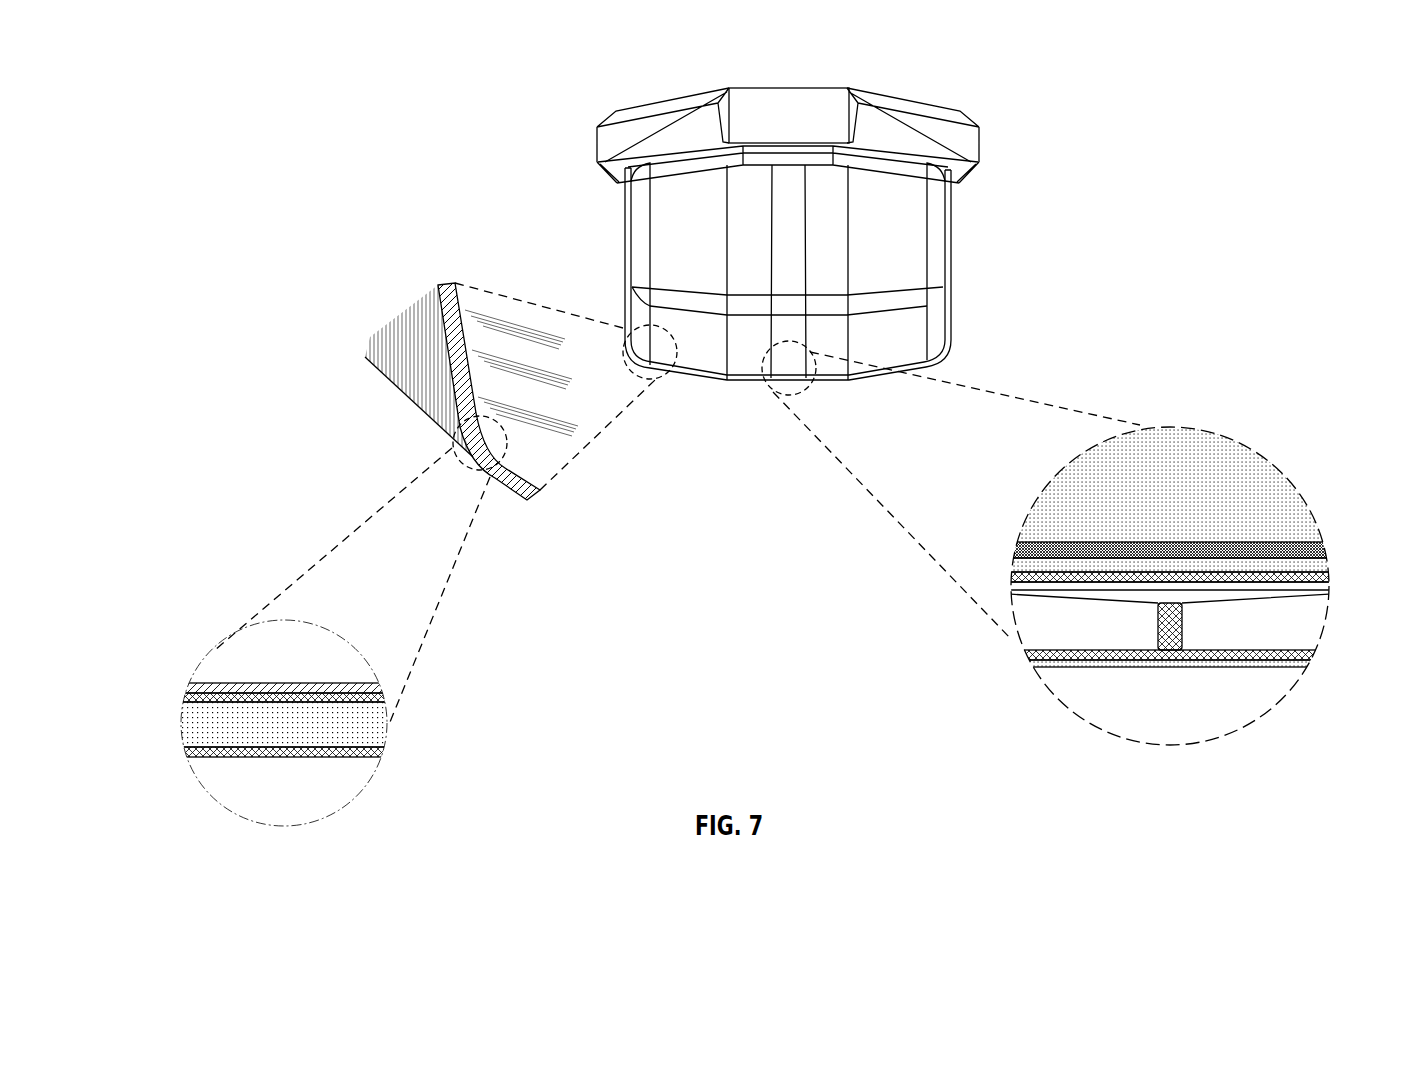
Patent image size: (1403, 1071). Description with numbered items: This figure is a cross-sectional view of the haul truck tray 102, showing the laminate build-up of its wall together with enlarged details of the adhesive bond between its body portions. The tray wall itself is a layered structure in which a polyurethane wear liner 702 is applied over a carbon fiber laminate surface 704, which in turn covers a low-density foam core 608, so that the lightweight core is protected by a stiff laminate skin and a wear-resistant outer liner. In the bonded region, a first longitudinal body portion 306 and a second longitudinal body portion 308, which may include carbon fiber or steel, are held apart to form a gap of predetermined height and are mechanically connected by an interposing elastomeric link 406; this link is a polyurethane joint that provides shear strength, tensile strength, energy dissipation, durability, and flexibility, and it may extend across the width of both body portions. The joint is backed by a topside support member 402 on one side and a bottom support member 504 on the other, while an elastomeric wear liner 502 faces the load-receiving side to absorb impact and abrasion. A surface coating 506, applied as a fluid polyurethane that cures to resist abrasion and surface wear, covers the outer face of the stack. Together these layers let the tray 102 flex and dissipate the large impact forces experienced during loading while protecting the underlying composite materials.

The haul truck tray 102 is at (947, 215).
The first longitudinal body portion 306 is at (1023, 617).
The second longitudinal body portion 308 is at (1266, 628).
The topside support member 402 is at (1018, 543).
The elastomeric link 406 is at (1172, 610).
The wear liner 502 is at (1230, 663).
The bottom support member 504 is at (1302, 571).
The surface coating 506 is at (1262, 487).
The low-density foam core 608 is at (218, 733).
The polyurethane wear liner 702 is at (308, 688).
The carbon fiber laminate surface 704 is at (375, 748).